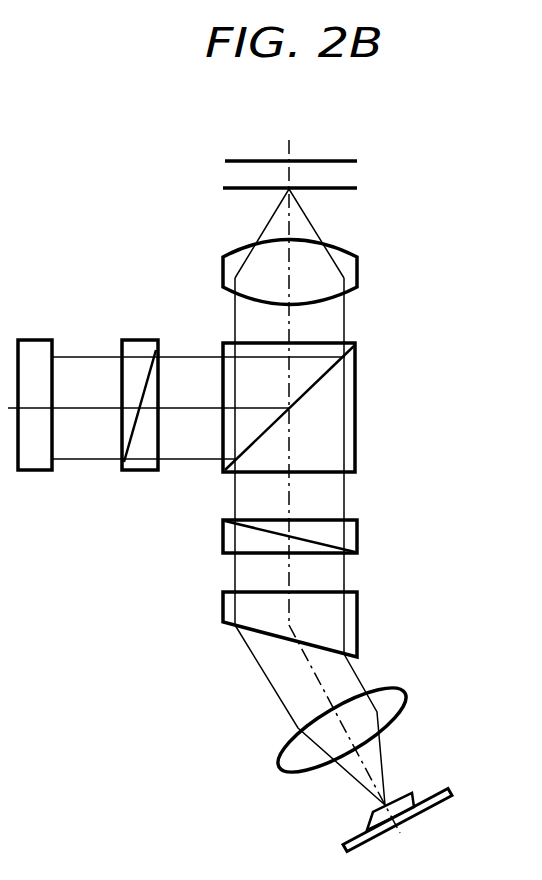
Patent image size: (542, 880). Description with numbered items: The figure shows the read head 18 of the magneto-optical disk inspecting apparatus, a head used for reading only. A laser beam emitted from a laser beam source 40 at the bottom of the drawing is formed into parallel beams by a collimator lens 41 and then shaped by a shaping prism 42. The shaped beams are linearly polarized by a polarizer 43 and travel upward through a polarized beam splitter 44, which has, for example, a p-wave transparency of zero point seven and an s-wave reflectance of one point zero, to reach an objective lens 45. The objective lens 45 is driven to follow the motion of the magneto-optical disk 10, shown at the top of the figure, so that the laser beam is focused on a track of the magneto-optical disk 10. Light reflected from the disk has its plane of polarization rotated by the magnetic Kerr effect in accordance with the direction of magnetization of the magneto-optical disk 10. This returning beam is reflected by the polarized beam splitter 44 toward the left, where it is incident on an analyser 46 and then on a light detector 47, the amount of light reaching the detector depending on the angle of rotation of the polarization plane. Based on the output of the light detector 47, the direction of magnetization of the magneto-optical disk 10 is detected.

The magneto-optical disk 10 is at (357, 160).
The read head 18 is at (195, 830).
The laser beam source 40 is at (413, 793).
The collimator lens 41 is at (400, 692).
The shaping prism 42 is at (357, 618).
The polarizer 43 is at (357, 537).
The polarized beam splitter 44 is at (357, 415).
The objective lens 45 is at (355, 252).
The analyser 46 is at (137, 340).
The light detector 47 is at (33, 340).